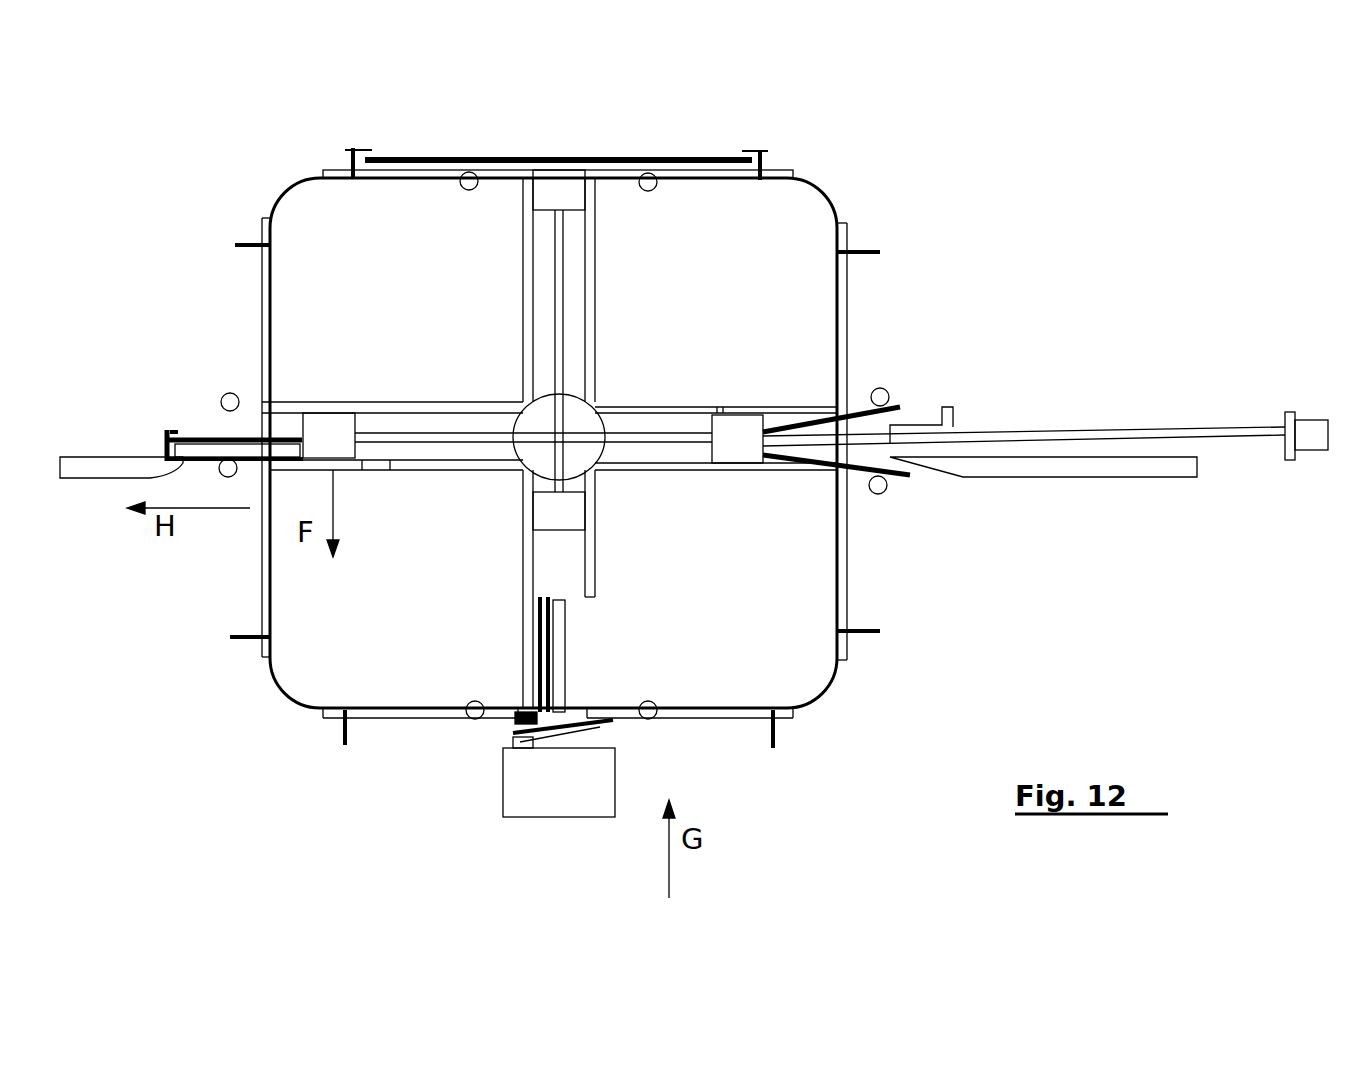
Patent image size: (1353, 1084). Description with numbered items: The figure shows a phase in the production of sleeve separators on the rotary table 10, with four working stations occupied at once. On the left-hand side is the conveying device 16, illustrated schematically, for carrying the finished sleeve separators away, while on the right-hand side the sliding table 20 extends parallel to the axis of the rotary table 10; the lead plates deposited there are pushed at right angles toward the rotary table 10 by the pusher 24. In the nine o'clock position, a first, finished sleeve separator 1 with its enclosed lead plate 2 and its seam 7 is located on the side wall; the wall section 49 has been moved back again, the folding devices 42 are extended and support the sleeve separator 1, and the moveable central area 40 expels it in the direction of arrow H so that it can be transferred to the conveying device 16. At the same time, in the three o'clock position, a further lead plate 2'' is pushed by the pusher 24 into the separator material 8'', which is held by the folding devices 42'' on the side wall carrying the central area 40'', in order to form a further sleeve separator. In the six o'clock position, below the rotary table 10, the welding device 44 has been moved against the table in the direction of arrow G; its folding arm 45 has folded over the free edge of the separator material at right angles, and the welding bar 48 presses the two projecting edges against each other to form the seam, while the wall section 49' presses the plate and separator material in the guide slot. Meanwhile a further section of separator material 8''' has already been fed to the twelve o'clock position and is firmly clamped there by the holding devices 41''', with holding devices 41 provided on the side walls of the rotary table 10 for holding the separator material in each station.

The sleeve separator 1 is at (195, 436).
The lead plate 2 is at (235, 478).
The lead plate 2'' is at (836, 476).
The seam 7 is at (165, 432).
The separator material 8'' is at (873, 386).
The separator material 8''' is at (558, 129).
The rotary table 10 is at (290, 697).
The conveying device 16 is at (100, 467).
The sliding table 20 is at (1095, 470).
The pusher 24 is at (953, 418).
The central area 40 is at (320, 406).
The central area 40'' is at (737, 467).
The holding devices 41 is at (517, 473).
The holding devices 41''' is at (569, 140).
The folding devices 42 is at (212, 454).
The folding devices 42'' is at (901, 431).
The welding device 44 is at (517, 803).
The folding arm 45 is at (605, 722).
The welding bar 48 is at (505, 740).
The wall section 49 is at (579, 441).
The wall section 49' is at (582, 656).